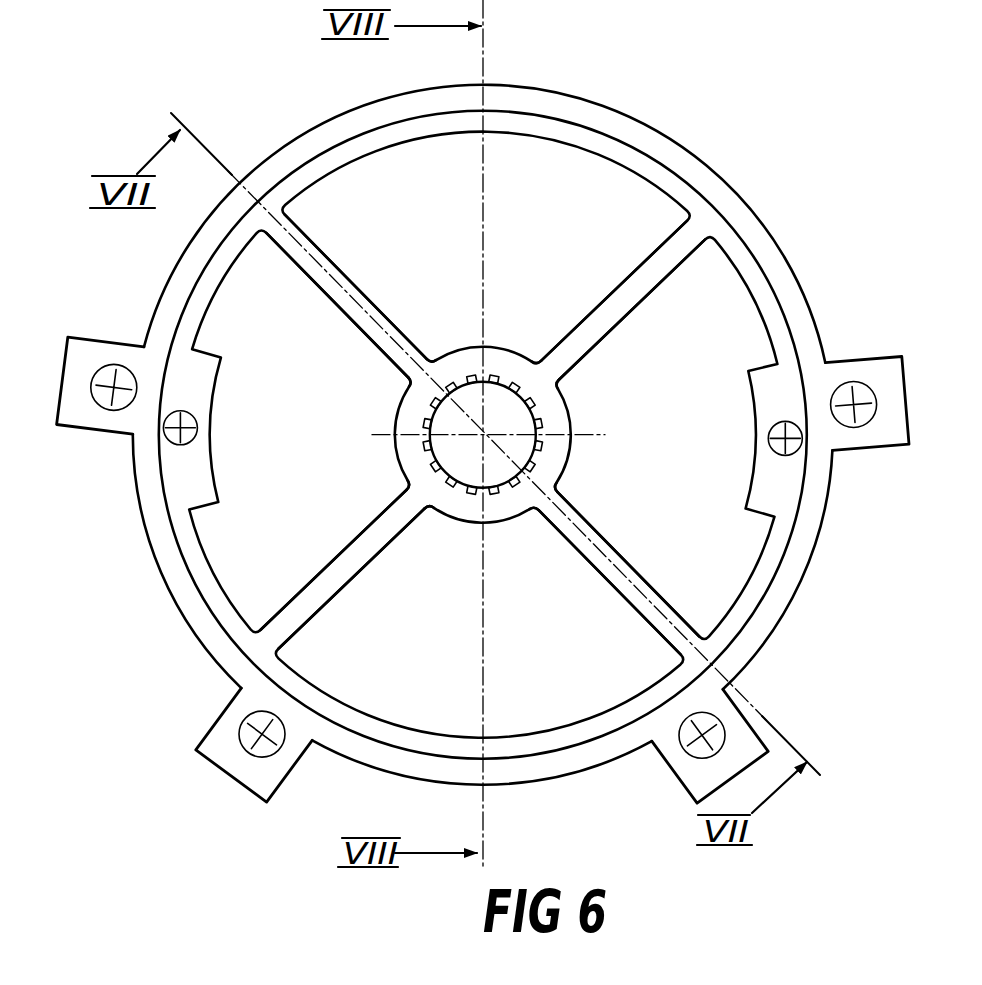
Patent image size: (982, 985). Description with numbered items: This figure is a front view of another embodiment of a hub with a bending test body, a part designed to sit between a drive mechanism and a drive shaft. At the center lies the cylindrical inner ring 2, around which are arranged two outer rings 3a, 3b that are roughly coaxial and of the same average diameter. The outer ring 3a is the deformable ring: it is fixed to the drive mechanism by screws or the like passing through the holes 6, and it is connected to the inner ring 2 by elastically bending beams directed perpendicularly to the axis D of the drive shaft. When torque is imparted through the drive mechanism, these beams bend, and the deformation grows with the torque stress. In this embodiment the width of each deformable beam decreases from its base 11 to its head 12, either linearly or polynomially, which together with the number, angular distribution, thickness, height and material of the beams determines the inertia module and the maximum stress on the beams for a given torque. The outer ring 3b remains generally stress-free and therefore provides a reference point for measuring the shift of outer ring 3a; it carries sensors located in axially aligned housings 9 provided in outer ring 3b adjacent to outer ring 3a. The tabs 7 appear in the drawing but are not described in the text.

The inner ring 2 is at (574, 422).
The outer ring 3a is at (603, 96).
The outer ring 3b is at (595, 153).
The holes 6 is at (128, 380).
The fixing tab 7 is at (87, 367).
The housings 9 is at (199, 419).
The base 11 is at (424, 352).
The head 12 is at (287, 209).
The axis D is at (443, 554).